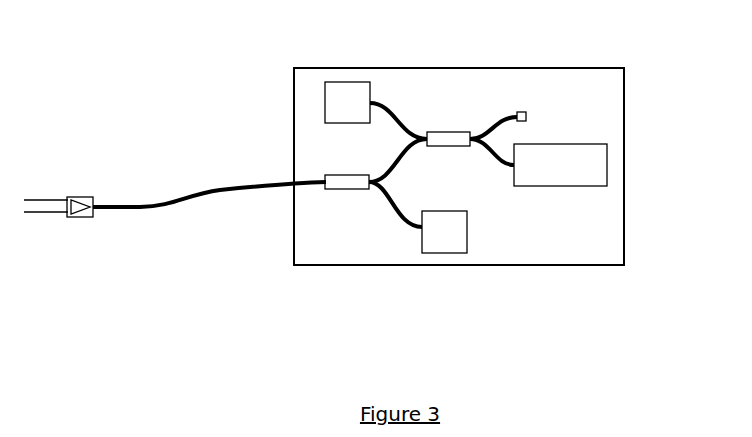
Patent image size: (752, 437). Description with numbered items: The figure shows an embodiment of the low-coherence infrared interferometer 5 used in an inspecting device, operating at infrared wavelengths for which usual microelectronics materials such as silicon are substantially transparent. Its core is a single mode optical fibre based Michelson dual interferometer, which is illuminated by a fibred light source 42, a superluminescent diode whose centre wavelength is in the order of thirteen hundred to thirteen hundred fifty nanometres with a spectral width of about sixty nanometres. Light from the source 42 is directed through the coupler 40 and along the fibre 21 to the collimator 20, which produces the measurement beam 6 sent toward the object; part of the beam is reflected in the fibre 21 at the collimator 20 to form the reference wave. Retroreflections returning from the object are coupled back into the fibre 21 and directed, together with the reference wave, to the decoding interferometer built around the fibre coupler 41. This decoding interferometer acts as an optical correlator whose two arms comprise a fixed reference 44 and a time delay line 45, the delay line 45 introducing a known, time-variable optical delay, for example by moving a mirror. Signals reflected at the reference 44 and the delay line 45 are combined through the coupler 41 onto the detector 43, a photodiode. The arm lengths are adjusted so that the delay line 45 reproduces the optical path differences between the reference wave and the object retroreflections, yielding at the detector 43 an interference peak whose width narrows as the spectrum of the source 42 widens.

The interferometer 5 is at (630, 167).
The measurement beam 6 is at (42, 200).
The collimator 20 is at (77, 218).
The fibre 21 is at (125, 210).
The coupler 40 is at (345, 190).
The fibre coupler 41 is at (448, 132).
The fibred light source 42 is at (445, 253).
The detector 43 is at (349, 81).
The fixed reference 44 is at (522, 112).
The time delay line 45 is at (560, 144).